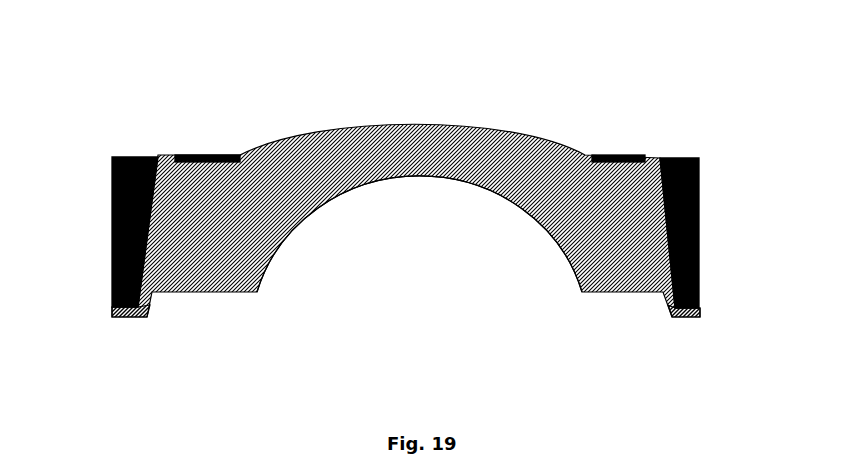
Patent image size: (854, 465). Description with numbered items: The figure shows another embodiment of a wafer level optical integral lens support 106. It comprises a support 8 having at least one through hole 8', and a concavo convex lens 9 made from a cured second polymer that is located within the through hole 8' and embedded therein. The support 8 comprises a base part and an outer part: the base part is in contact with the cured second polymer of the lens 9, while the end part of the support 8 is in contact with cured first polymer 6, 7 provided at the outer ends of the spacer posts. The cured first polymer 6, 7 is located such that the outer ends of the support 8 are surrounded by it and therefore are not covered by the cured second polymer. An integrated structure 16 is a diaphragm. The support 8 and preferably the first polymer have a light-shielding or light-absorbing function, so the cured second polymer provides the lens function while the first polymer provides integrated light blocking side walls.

The wafer level optical integral lens support 106 is at (315, 98).
The concavo convex lens 9 is at (280, 252).
The support 8 is at (415, 212).
The through hole 8' is at (197, 142).
The integrated structure 16 is at (620, 152).
The cured first polymer 6 is at (668, 315).
The cured first polymer 7 is at (135, 317).